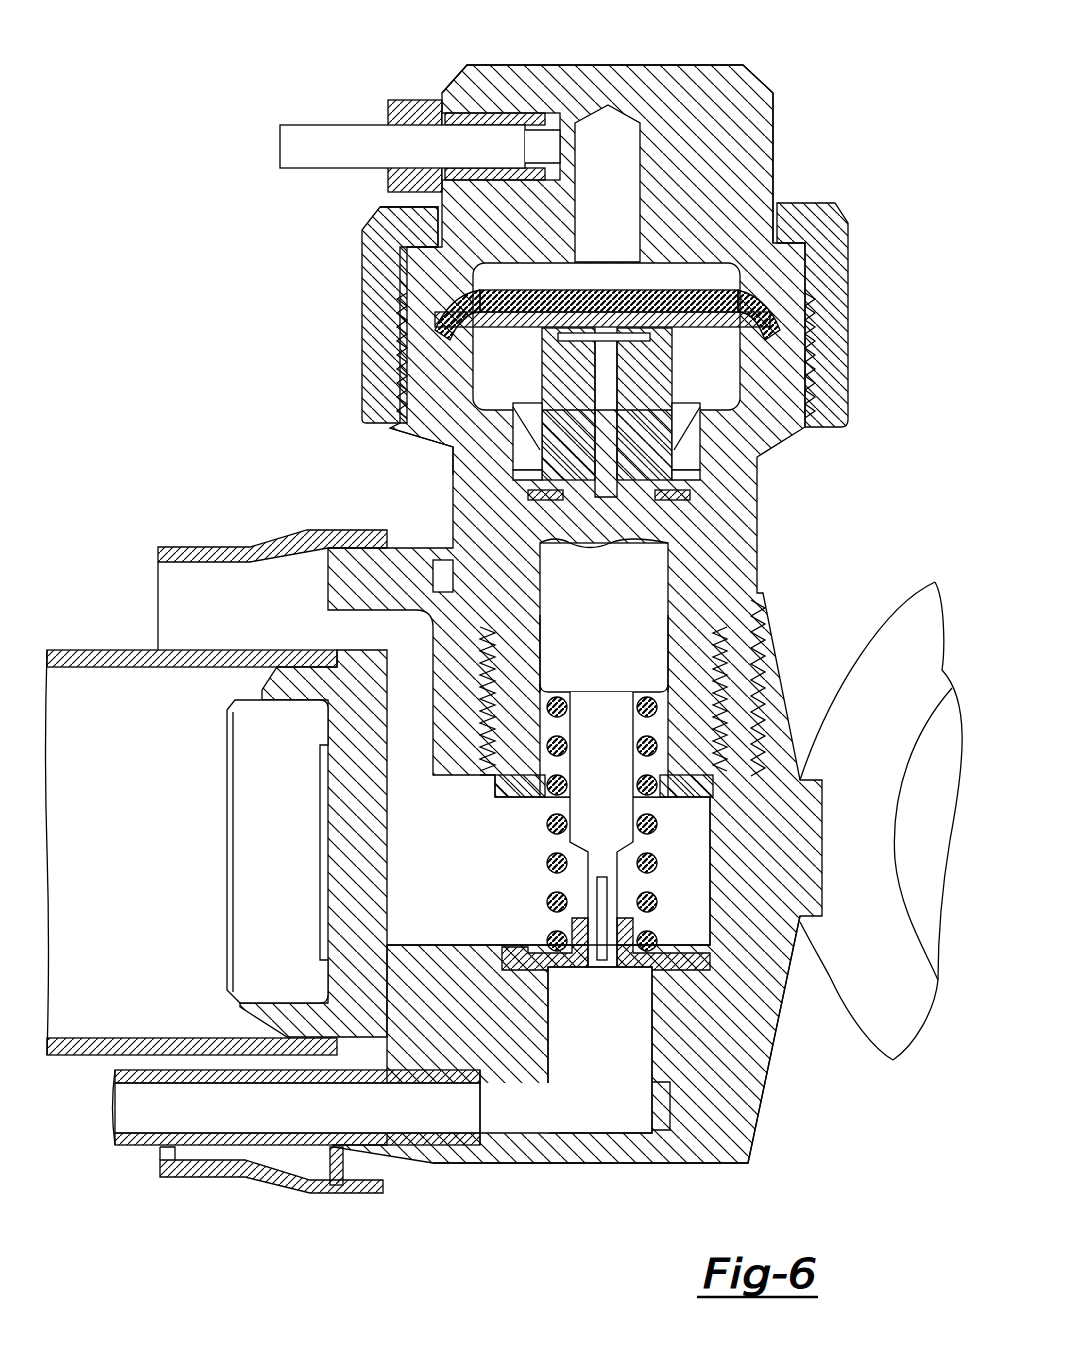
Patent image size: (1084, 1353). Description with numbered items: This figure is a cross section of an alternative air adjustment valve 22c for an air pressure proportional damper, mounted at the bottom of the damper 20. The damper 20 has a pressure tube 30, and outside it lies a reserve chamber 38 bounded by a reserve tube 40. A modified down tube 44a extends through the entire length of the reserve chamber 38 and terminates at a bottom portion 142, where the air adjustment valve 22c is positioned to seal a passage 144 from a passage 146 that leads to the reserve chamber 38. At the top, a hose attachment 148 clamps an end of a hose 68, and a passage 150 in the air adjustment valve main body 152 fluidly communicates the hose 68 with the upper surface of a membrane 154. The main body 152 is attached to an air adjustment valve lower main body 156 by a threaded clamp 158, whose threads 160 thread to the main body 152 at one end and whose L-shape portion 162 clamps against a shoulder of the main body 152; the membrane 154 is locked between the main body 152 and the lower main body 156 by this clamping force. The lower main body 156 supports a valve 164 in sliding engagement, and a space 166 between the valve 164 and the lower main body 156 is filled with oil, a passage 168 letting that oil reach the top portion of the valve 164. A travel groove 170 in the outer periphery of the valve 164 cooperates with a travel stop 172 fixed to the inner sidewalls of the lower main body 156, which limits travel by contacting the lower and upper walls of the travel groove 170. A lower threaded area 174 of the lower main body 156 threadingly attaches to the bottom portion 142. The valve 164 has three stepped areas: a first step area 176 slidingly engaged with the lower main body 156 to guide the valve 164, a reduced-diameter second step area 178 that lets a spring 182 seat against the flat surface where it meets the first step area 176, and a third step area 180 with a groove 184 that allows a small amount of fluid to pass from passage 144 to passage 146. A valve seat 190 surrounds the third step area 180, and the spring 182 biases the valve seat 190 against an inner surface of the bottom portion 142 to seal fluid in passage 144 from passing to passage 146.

The damper 20 is at (115, 578).
The air adjustment valve 22c is at (232, 208).
The pressure tube 30 is at (88, 650).
The reserve chamber 38 is at (268, 575).
The reserve tube 40 is at (192, 545).
The modified down tube 44a is at (187, 1145).
The hose 68 is at (310, 125).
The bottom portion 142 is at (730, 1120).
The passage 144 is at (598, 1100).
The passage 146 is at (445, 888).
The hose attachment 148 is at (440, 100).
The passage 150 is at (608, 135).
The air adjustment valve main body 152 is at (720, 148).
The membrane 154 is at (705, 300).
The air adjustment valve lower main body 156 is at (418, 438).
The threaded clamp 158 is at (362, 280).
The threads 160 is at (400, 338).
The L-shape portion 162 is at (385, 210).
The valve 164 is at (712, 558).
The space 166 is at (715, 393).
The passage 168 is at (600, 440).
The travel groove 170 is at (650, 465).
The travel stop 172 is at (680, 497).
The lower threaded area 174 is at (672, 615).
The first step area 176 is at (615, 598).
The second step area 178 is at (615, 728).
The third step area 180 is at (612, 868).
The spring 182 is at (548, 822).
The groove 184 is at (597, 882).
The valve seat 190 is at (528, 947).